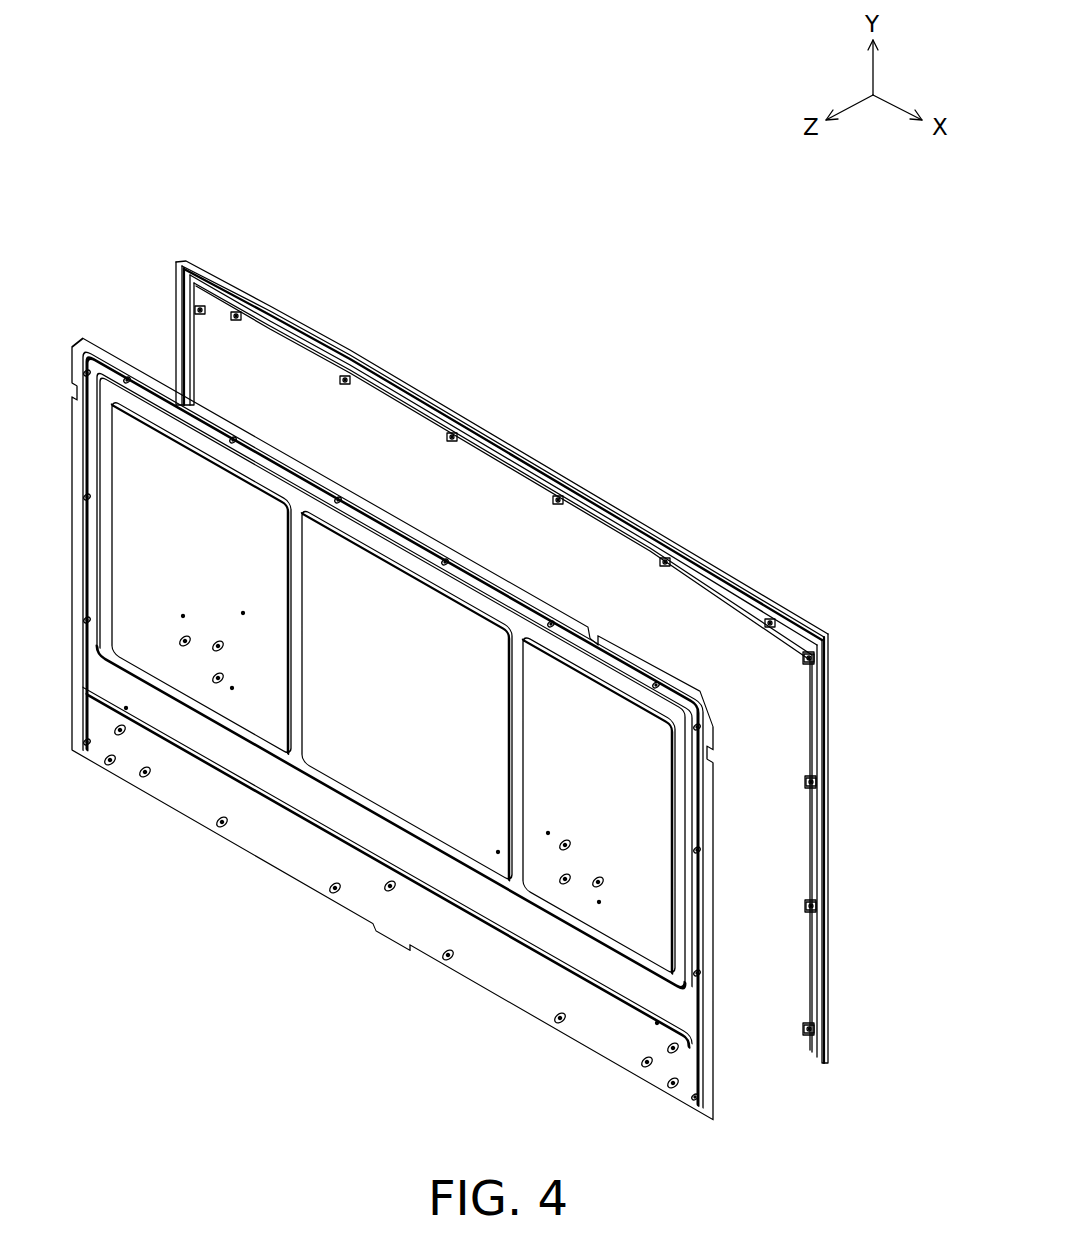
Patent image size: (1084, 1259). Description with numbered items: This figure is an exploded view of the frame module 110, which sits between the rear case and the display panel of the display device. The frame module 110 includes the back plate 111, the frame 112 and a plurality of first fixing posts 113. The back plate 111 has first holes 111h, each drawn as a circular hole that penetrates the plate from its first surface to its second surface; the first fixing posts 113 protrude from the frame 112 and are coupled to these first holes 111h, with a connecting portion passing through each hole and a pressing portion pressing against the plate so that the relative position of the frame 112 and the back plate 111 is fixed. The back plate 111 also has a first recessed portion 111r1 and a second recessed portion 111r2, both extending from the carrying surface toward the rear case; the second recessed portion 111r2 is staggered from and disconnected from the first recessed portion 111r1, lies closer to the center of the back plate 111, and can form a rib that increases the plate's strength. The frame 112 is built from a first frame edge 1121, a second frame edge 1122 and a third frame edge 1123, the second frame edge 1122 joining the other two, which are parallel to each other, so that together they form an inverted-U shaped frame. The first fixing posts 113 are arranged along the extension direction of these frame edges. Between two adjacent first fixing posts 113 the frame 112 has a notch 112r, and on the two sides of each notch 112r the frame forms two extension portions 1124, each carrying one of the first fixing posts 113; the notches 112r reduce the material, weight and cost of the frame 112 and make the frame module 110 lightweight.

The frame module 110 is at (790, 420).
The back plate 111 is at (730, 1097).
The first hole 111h is at (338, 500).
The first recessed portion 111r1 is at (693, 1058).
The second recessed portion 111r2 is at (583, 933).
The frame 112 is at (876, 816).
The first frame edge 1121 is at (824, 1010).
The second frame edge 1122 is at (618, 528).
The third frame edge 1123 is at (183, 333).
The extension portion 1124 is at (805, 785).
The notch 112r is at (509, 472).
The first fixing post 113 is at (205, 315).